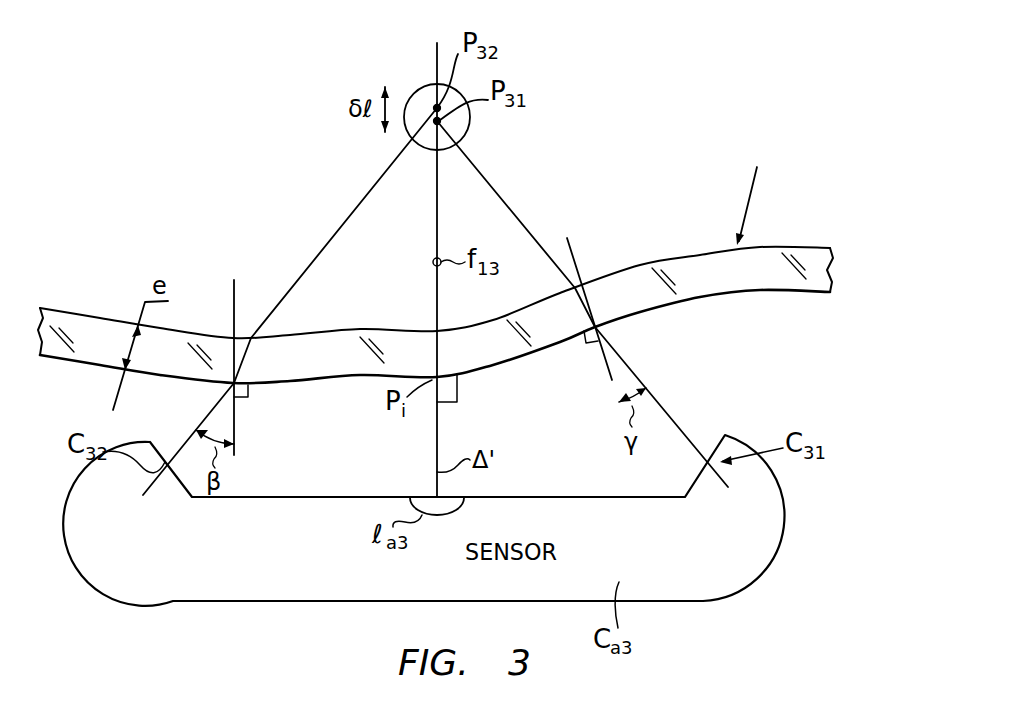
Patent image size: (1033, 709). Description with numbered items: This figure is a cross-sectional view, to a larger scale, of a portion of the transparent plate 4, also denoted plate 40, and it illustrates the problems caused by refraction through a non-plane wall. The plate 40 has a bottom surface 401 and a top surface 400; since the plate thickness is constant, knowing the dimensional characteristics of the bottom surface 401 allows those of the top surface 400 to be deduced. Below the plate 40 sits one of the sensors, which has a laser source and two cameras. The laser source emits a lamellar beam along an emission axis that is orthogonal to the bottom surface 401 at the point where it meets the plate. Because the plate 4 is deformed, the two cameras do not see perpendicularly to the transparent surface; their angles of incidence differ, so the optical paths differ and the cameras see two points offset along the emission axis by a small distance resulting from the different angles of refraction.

The transparent plate 4 is at (463, 260).
The top surface 400 is at (788, 245).
The bottom surface 401 is at (753, 293).
The plate 40 is at (823, 278).